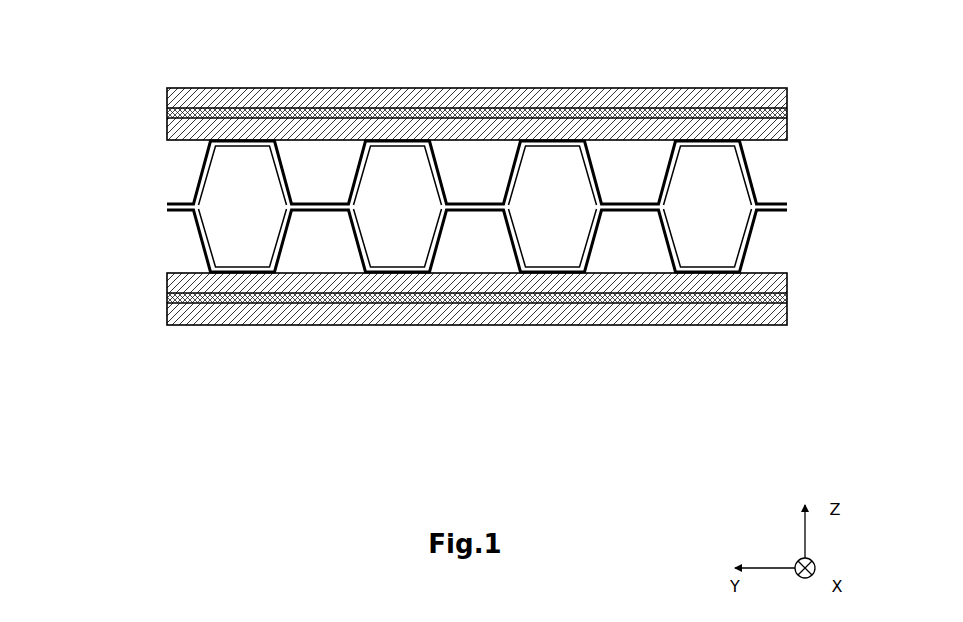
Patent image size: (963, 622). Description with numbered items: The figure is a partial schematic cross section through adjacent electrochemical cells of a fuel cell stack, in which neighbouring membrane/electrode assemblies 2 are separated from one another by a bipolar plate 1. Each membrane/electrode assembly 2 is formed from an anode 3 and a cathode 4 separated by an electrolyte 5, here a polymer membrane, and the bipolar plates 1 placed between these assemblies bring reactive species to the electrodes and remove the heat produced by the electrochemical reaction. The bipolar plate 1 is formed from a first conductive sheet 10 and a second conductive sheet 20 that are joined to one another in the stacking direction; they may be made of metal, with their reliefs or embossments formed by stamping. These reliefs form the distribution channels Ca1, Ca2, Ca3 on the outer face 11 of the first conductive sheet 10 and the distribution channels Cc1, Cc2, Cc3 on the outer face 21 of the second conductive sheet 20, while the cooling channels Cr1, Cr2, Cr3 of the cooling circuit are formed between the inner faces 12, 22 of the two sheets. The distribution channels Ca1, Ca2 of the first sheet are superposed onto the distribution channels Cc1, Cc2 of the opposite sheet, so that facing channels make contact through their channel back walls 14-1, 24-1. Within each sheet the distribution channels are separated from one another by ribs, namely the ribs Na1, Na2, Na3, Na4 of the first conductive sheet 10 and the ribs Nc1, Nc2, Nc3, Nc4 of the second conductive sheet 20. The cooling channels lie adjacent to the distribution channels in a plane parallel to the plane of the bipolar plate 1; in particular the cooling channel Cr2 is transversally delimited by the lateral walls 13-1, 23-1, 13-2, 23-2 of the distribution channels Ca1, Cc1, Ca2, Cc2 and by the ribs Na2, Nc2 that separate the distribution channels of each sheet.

The bipolar plate 1 is at (493, 206).
The membrane/electrode assembly 2 is at (412, 208).
The anode 3 is at (165, 98).
The cathode 4 is at (165, 128).
The electrolyte 5 is at (165, 112).
The first conductive sheet 10 is at (474, 240).
The outer face of first conductive sheet 11 is at (207, 248).
The inner face of first conductive sheet 12 is at (207, 244).
The lateral wall of distribution channel 13-1 is at (362, 255).
The lateral wall of distribution channel 13-2 is at (437, 255).
The channel back wall 14-1 is at (388, 268).
The second conductive sheet 20 is at (474, 173).
The outer face of second conductive sheet 21 is at (205, 157).
The inner face of second conductive sheet 22 is at (207, 184).
The lateral wall of distribution channel 23-1 is at (359, 178).
The lateral wall of distribution channel 23-2 is at (436, 178).
The channel back wall 24-1 is at (383, 147).
The rib Nc1 is at (243, 139).
The rib Nc2 is at (418, 139).
The rib Nc3 is at (545, 139).
The rib Nc4 is at (703, 139).
The rib Na1 is at (243, 276).
The rib Na2 is at (418, 276).
The rib Na3 is at (550, 276).
The rib Na4 is at (707, 276).
The cooling channel Cr1 is at (242, 206).
The cooling channel Cr2 is at (397, 206).
The cooling channel Cr3 is at (552, 206).
The distribution channel Cc1 is at (322, 164).
The distribution channel Cc2 is at (476, 164).
The distribution channel Cc3 is at (630, 164).
The distribution channel Ca1 is at (321, 242).
The distribution channel Ca2 is at (475, 242).
The distribution channel Ca3 is at (629, 242).